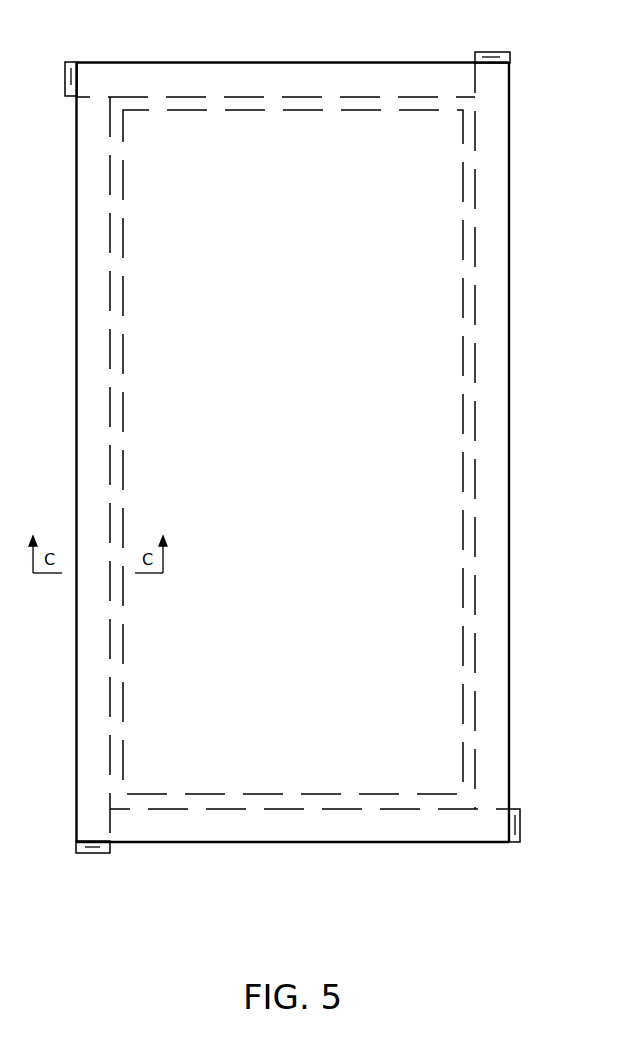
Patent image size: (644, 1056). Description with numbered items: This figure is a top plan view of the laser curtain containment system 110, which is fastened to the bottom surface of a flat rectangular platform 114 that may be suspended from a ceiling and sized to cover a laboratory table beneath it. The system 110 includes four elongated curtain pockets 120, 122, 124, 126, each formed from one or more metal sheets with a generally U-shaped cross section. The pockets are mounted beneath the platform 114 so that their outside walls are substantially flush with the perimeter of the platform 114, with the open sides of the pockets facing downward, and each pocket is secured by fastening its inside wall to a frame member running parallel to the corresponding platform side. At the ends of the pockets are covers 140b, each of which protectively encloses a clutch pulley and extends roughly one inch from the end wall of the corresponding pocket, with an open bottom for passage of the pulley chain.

The laser curtain containment system 110 is at (528, 305).
The flat rectangular platform 114 is at (310, 313).
The curtain pocket 120 is at (87, 307).
The curtain pocket 122 is at (282, 73).
The curtain pocket 124 is at (495, 403).
The curtain pocket 126 is at (371, 832).
The cover 140b is at (65, 78).